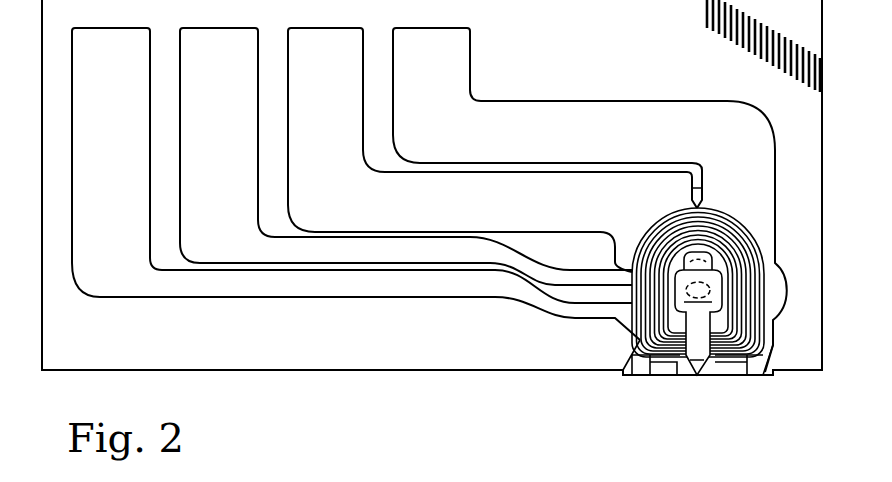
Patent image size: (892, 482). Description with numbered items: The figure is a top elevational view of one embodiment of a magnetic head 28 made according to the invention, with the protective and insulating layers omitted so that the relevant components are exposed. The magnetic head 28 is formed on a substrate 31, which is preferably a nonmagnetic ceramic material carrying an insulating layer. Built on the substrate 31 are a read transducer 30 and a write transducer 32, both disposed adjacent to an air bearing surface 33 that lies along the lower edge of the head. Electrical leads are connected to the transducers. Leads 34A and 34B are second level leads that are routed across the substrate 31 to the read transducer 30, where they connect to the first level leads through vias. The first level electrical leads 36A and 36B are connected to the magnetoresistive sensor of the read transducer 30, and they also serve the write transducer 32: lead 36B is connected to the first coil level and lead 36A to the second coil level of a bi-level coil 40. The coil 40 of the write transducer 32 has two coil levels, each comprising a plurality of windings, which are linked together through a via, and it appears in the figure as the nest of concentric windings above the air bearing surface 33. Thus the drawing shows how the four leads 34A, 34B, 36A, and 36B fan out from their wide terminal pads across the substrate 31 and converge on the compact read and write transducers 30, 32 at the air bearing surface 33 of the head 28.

The magnetic head 28 is at (752, 384).
The read transducer 30 is at (697, 377).
The substrate 31 is at (290, 348).
The write transducer 32 is at (643, 347).
The air bearing surface 33 is at (673, 377).
The electrical lead 34A is at (347, 90).
The electrical lead 34B is at (453, 88).
The first level electrical lead 36A is at (241, 90).
The first level electrical lead 36B is at (133, 90).
The bi-level coil 40 is at (740, 214).